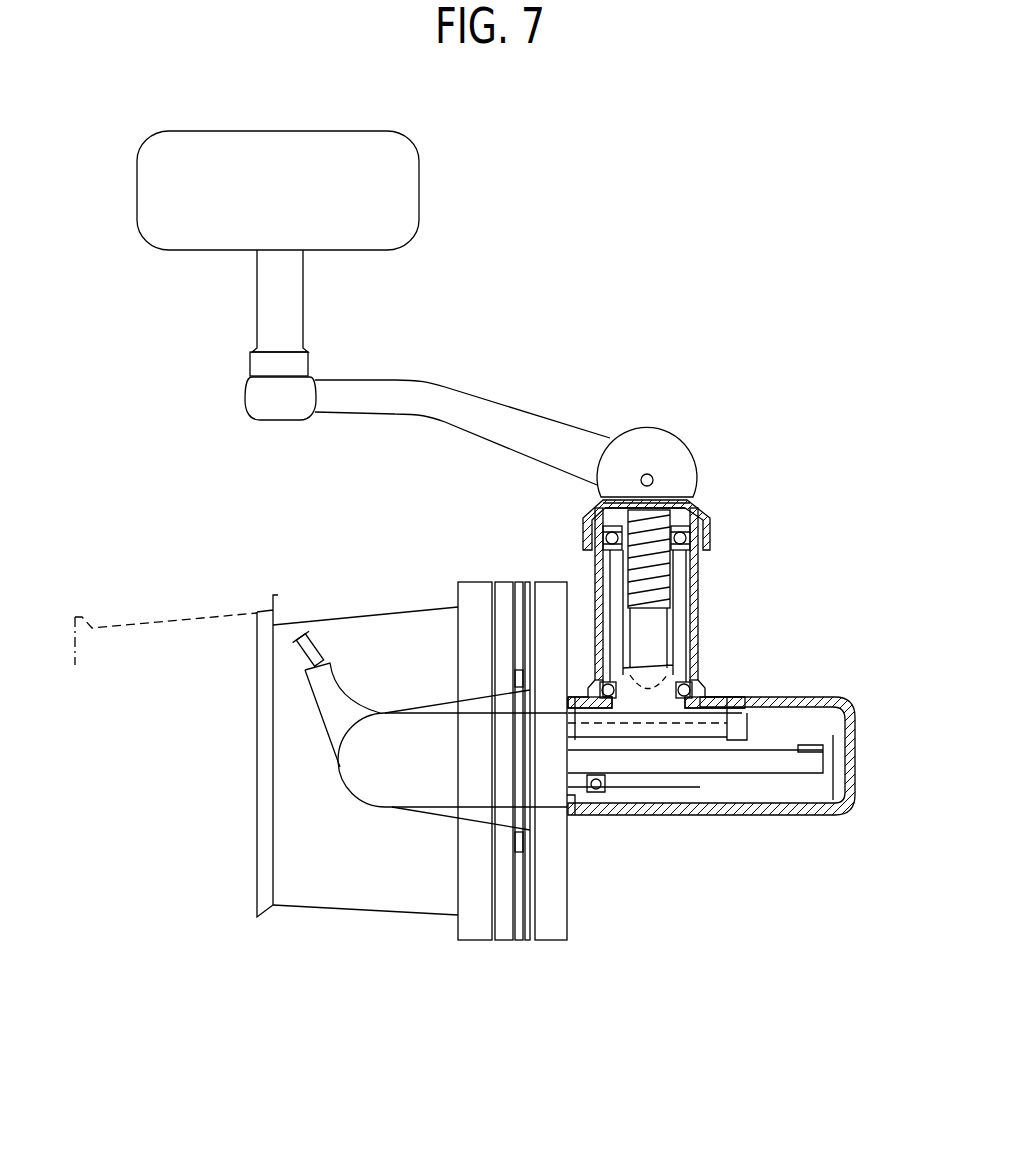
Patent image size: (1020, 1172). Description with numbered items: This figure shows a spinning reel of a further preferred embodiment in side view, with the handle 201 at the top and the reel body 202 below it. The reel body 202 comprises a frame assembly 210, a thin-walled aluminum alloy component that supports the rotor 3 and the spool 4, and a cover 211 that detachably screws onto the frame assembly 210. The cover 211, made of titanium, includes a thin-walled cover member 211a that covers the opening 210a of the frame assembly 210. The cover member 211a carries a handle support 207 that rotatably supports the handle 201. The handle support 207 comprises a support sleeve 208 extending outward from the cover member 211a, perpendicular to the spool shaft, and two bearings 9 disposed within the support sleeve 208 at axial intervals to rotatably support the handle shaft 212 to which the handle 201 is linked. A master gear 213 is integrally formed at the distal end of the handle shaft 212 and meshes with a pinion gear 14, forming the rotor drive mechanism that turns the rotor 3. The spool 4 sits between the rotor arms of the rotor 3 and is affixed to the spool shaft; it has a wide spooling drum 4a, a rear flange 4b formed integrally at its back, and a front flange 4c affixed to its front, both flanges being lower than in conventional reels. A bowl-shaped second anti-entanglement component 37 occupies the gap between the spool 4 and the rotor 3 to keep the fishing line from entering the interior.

The handle 201 is at (550, 433).
The bearings 9 is at (710, 528).
The support sleeve 208 is at (698, 568).
The handle support 207 is at (684, 605).
The handle shaft 212 is at (668, 652).
The cover member 211a is at (735, 700).
The cover 211 is at (803, 677).
The reel body 202 is at (829, 691).
The master gear 213 is at (771, 705).
The frame assembly 210 is at (750, 818).
The opening 210a is at (833, 737).
The pinion gear 14 is at (583, 817).
The rotor 3 is at (555, 592).
The second anti-entanglement component 37 is at (503, 930).
The rear flange 4b is at (478, 592).
The spool 4 is at (387, 640).
The spooling drum 4a is at (336, 620).
The front flange 4c is at (270, 610).